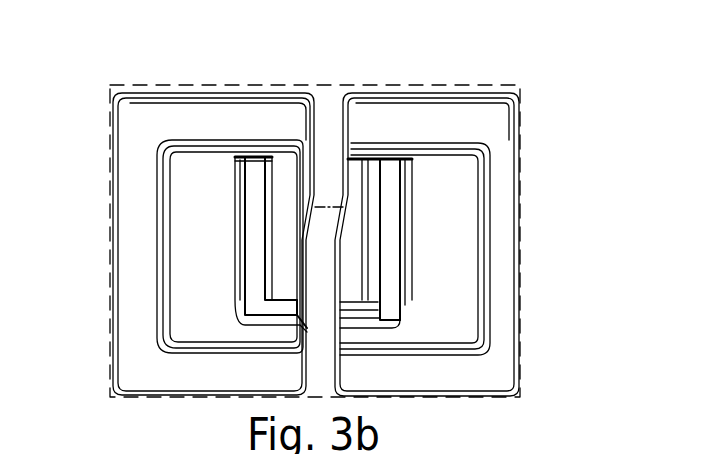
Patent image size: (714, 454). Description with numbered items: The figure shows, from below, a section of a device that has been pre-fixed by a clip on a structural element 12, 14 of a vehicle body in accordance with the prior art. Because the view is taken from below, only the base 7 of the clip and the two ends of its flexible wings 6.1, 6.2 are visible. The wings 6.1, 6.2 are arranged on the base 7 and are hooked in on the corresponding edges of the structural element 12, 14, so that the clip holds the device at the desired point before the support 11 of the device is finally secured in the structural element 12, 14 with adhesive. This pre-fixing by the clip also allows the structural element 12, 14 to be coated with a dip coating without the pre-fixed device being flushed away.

The base 7 is at (328, 137).
The support 11 is at (503, 120).
The flexible wing 6.1 is at (252, 227).
The flexible wing 6.2 is at (393, 207).
The structural element 12 is at (479, 244).
The structural element 14 is at (450, 277).